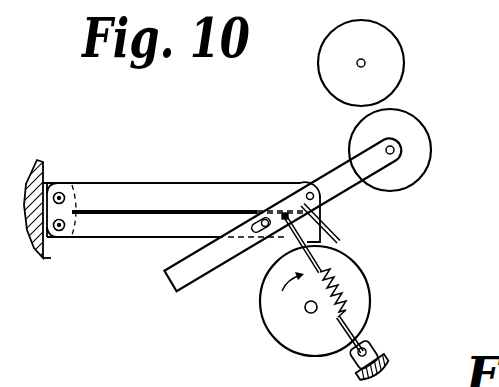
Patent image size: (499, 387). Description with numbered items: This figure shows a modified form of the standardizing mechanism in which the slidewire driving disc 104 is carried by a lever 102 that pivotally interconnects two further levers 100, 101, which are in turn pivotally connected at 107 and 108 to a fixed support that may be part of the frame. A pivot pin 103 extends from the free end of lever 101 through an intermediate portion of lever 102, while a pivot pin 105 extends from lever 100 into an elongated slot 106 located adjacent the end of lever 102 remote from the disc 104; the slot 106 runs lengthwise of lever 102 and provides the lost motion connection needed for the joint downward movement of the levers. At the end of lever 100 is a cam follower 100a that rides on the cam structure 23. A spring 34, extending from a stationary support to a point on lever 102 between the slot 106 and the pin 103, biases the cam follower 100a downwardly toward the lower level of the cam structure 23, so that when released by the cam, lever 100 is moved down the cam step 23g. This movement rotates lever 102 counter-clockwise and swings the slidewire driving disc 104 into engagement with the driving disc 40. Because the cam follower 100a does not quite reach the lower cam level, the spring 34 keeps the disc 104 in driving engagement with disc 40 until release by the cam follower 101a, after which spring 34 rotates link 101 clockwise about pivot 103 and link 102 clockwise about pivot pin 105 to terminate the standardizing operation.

The driving disc 40 is at (398, 62).
The slidewire driving disc 104 is at (433, 138).
The lever 102 is at (337, 172).
The lever 101 is at (118, 192).
The cam follower 101a is at (323, 215).
The lever 100 is at (135, 228).
The pivot 108 is at (66, 196).
The pivot 107 is at (62, 231).
The pivot pin 105 is at (263, 220).
The elongated slot 106 is at (265, 236).
The pivot pin 103 is at (307, 193).
The cam follower 100a is at (288, 222).
The cam step 23g is at (322, 247).
The cam structure 23 is at (364, 282).
The spring 34 is at (342, 307).